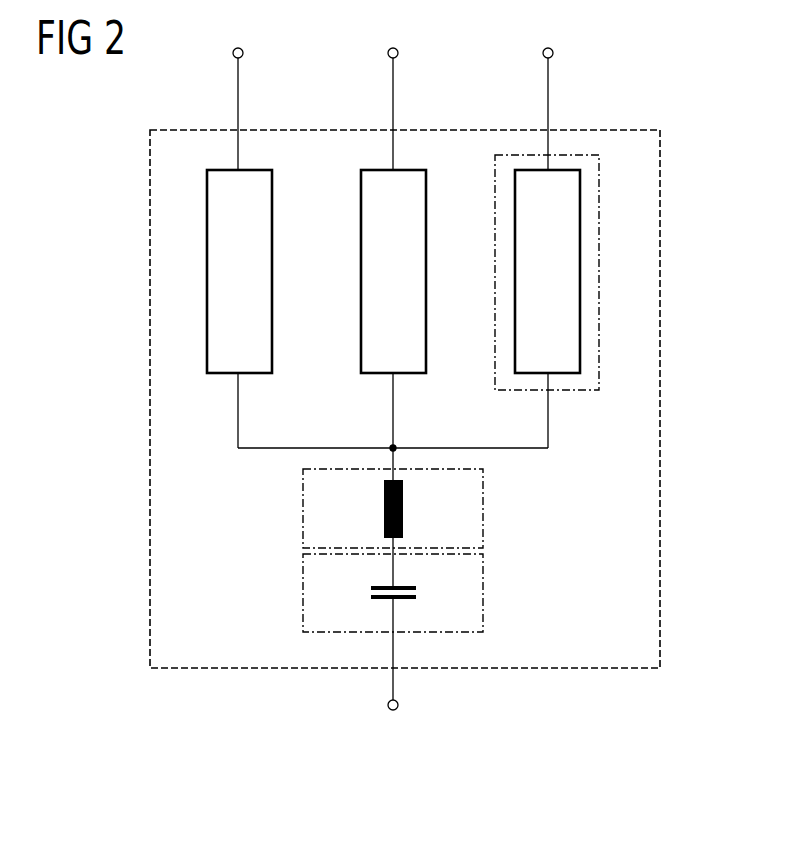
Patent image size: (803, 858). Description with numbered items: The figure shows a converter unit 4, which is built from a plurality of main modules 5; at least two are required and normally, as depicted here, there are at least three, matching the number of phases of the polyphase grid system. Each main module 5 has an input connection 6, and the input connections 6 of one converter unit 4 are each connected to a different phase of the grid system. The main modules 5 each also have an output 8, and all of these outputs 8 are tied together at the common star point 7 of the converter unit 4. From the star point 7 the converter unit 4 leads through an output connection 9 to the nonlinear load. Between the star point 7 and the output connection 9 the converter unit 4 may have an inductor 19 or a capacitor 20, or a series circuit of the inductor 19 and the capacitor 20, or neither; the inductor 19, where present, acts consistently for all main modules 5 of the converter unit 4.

The converter unit 4 is at (660, 386).
The main module 5 is at (220, 168).
The input connection 6 is at (244, 53).
The star point 7 is at (394, 447).
The output 8 is at (238, 374).
The output connection 9 is at (399, 706).
The inductor 19 is at (403, 509).
The capacitor 20 is at (405, 598).